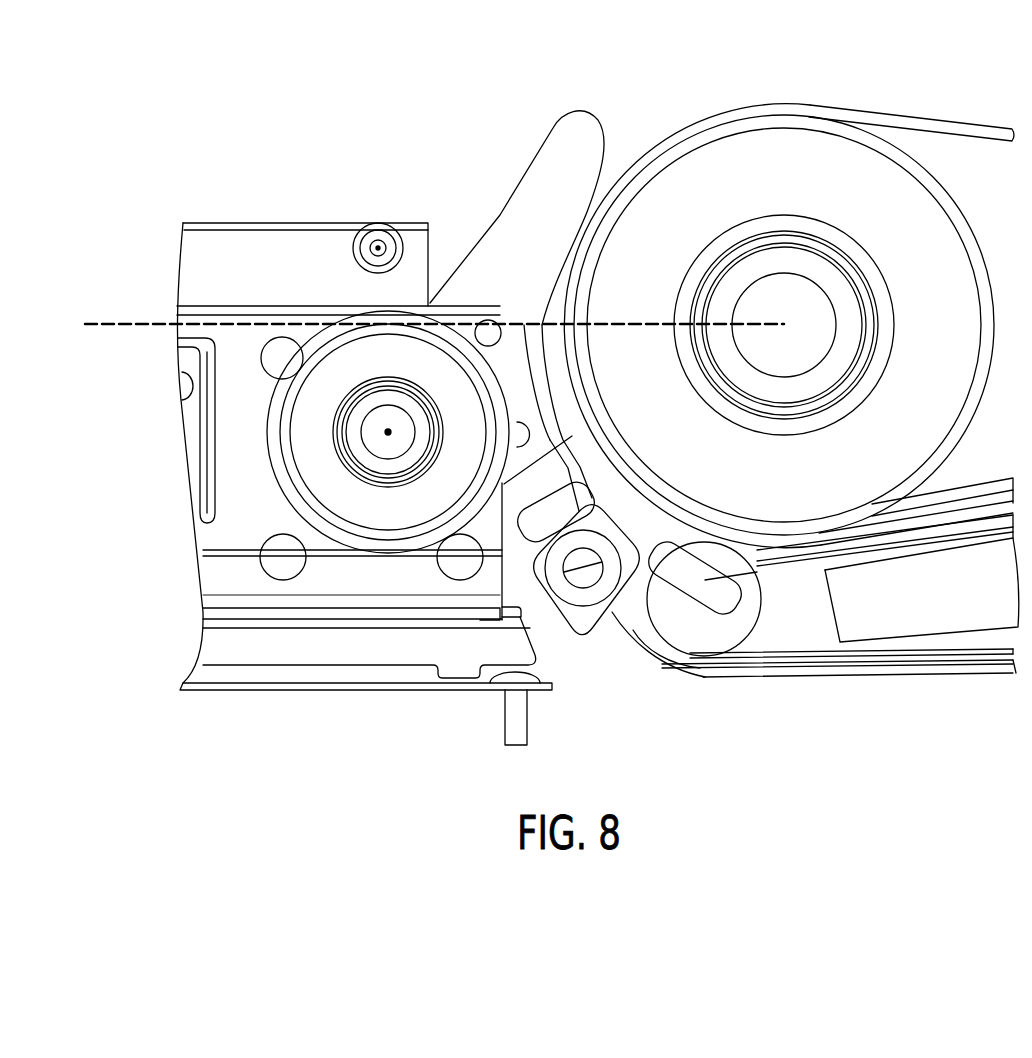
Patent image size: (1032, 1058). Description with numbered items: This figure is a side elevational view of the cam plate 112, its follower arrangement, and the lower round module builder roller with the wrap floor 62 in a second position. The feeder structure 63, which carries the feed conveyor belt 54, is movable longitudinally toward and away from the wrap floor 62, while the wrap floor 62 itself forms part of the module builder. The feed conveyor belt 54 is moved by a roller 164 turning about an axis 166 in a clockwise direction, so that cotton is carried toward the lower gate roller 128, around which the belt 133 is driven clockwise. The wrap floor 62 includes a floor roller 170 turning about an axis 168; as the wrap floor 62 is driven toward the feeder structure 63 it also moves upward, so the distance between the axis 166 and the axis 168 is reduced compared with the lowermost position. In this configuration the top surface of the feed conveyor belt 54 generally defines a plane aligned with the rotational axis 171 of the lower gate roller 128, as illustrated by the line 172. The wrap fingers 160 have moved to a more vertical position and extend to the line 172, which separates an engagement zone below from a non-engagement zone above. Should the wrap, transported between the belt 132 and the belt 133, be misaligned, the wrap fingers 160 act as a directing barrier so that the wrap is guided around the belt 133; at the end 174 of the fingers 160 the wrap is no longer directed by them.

The feeder structure 63 is at (262, 192).
The feed conveyor belt 54 is at (195, 306).
The end of the fingers 174 is at (520, 310).
The cam plate 112 is at (578, 135).
The lower gate roller 128 is at (713, 160).
The belt 133 is at (862, 109).
The rotational axis 171 is at (785, 312).
The line 172 is at (132, 337).
The roller 164 is at (302, 413).
The axis 166 is at (385, 434).
The wrap fingers 160 is at (548, 396).
The axis 168 is at (680, 652).
The floor roller 170 is at (718, 647).
The wrap floor 62 is at (788, 718).
The belt 132 is at (923, 668).